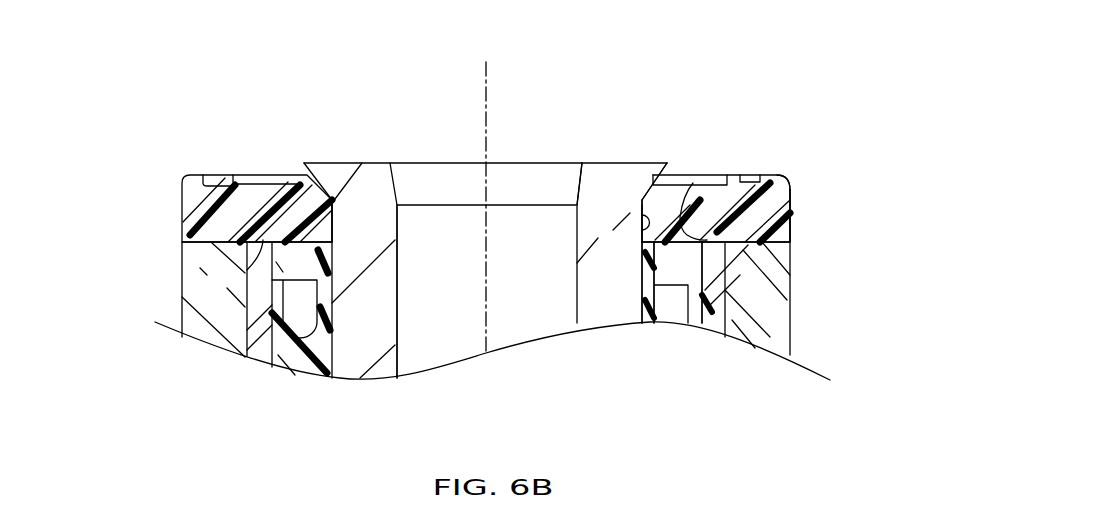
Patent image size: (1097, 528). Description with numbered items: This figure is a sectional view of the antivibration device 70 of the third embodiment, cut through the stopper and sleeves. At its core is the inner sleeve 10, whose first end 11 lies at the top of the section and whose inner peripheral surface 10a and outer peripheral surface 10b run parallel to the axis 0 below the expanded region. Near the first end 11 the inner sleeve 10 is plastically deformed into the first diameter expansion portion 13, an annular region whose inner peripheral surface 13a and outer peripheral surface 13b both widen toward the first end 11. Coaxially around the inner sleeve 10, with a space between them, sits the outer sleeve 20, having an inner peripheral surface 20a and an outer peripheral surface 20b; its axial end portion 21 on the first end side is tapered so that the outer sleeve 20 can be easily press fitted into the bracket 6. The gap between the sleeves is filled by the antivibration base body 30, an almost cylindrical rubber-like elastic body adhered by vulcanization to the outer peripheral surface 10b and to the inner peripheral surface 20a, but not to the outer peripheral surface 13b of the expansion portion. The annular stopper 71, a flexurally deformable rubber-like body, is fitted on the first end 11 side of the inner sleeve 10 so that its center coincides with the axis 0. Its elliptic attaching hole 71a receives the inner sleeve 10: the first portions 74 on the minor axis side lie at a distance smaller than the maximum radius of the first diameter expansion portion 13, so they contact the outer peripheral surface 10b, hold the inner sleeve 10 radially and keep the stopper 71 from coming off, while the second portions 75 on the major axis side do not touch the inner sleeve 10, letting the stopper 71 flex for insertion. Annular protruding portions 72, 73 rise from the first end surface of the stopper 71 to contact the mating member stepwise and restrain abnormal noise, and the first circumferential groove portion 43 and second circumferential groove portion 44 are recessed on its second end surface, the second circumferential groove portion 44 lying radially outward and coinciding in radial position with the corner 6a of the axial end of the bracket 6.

The axis 0 is at (486, 68).
The bracket 6 is at (777, 320).
The corner of the axial end portion of the bracket 6a is at (790, 197).
The inner sleeve 10 is at (365, 328).
The inner peripheral surface 10a is at (397, 276).
The outer peripheral surface 10b is at (642, 232).
The first end 11 is at (353, 163).
The first diameter expansion portion 13 is at (611, 203).
The inner peripheral surface 13a is at (578, 180).
The outer peripheral surface 13b is at (660, 172).
The outer sleeve 20 is at (703, 327).
The inner peripheral surface 20a is at (675, 323).
The outer peripheral surface 20b is at (727, 317).
The axial end portion 21 is at (693, 183).
The antivibration base body 30 is at (295, 360).
The first circumferential groove portion 43 is at (247, 273).
The second circumferential groove portion 44 is at (193, 257).
The antivibration device 70 is at (775, 93).
The stopper 71 is at (793, 170).
The attaching hole 71a is at (333, 213).
The protruding portion 72 is at (237, 177).
The protruding portion 73 is at (197, 173).
The first portions 74 is at (193, 220).
The second portions 75 is at (795, 182).